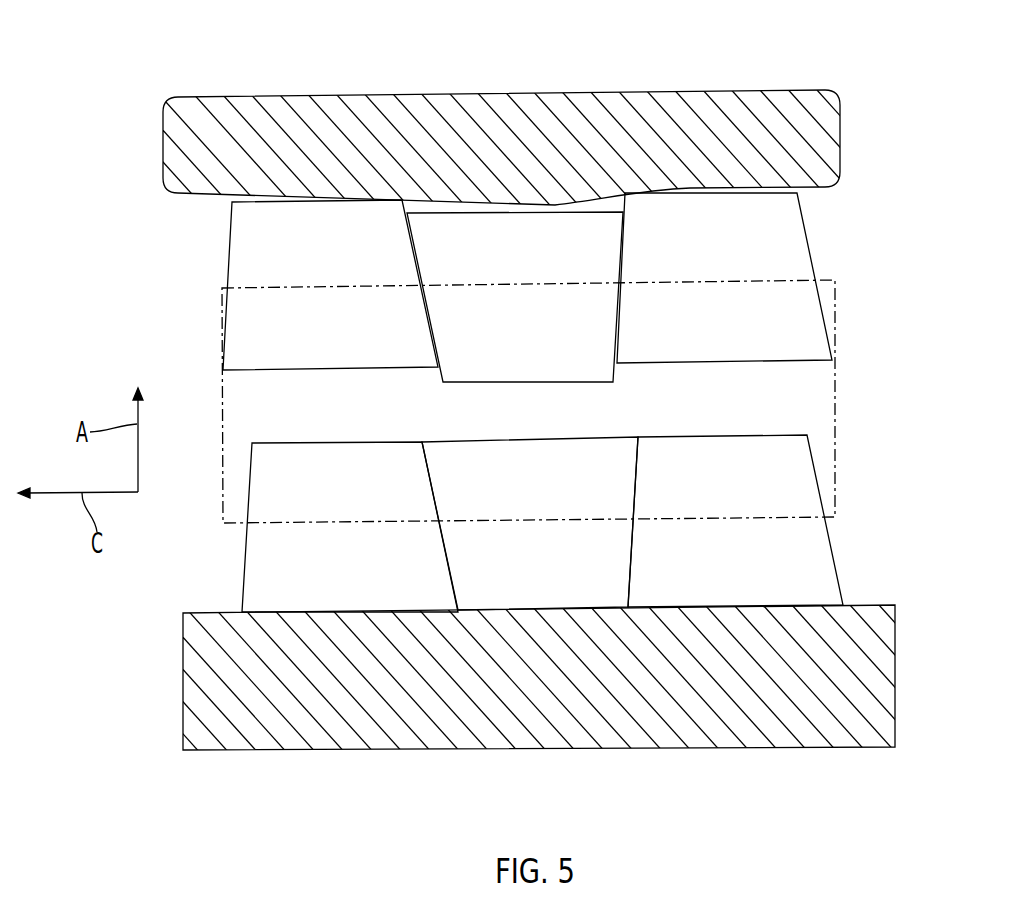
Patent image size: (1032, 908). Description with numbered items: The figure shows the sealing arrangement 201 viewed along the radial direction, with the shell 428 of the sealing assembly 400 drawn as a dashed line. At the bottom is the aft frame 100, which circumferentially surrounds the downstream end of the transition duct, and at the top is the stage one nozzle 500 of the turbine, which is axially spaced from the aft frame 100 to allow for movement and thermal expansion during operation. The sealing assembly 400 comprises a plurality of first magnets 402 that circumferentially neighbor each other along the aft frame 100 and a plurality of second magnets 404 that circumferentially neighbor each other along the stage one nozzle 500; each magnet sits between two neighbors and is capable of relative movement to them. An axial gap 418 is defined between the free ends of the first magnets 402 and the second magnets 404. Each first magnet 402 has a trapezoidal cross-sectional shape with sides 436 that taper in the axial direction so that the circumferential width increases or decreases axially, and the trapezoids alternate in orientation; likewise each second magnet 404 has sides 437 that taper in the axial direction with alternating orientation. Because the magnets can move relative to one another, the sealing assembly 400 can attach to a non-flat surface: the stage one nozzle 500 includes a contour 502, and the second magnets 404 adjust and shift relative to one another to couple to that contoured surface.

The aft frame 100 is at (885, 652).
The sealing arrangement 201 is at (118, 94).
The sealing assembly 400 is at (905, 290).
The first magnet 402 is at (248, 552).
The second magnet 404 is at (462, 230).
The axial gap 418 is at (531, 423).
The shell 428 is at (836, 382).
The sides of the first magnets 436 is at (251, 468).
The sides of the second magnets 437 is at (407, 235).
The stage one nozzle 500 is at (833, 140).
The contour 502 is at (532, 203).